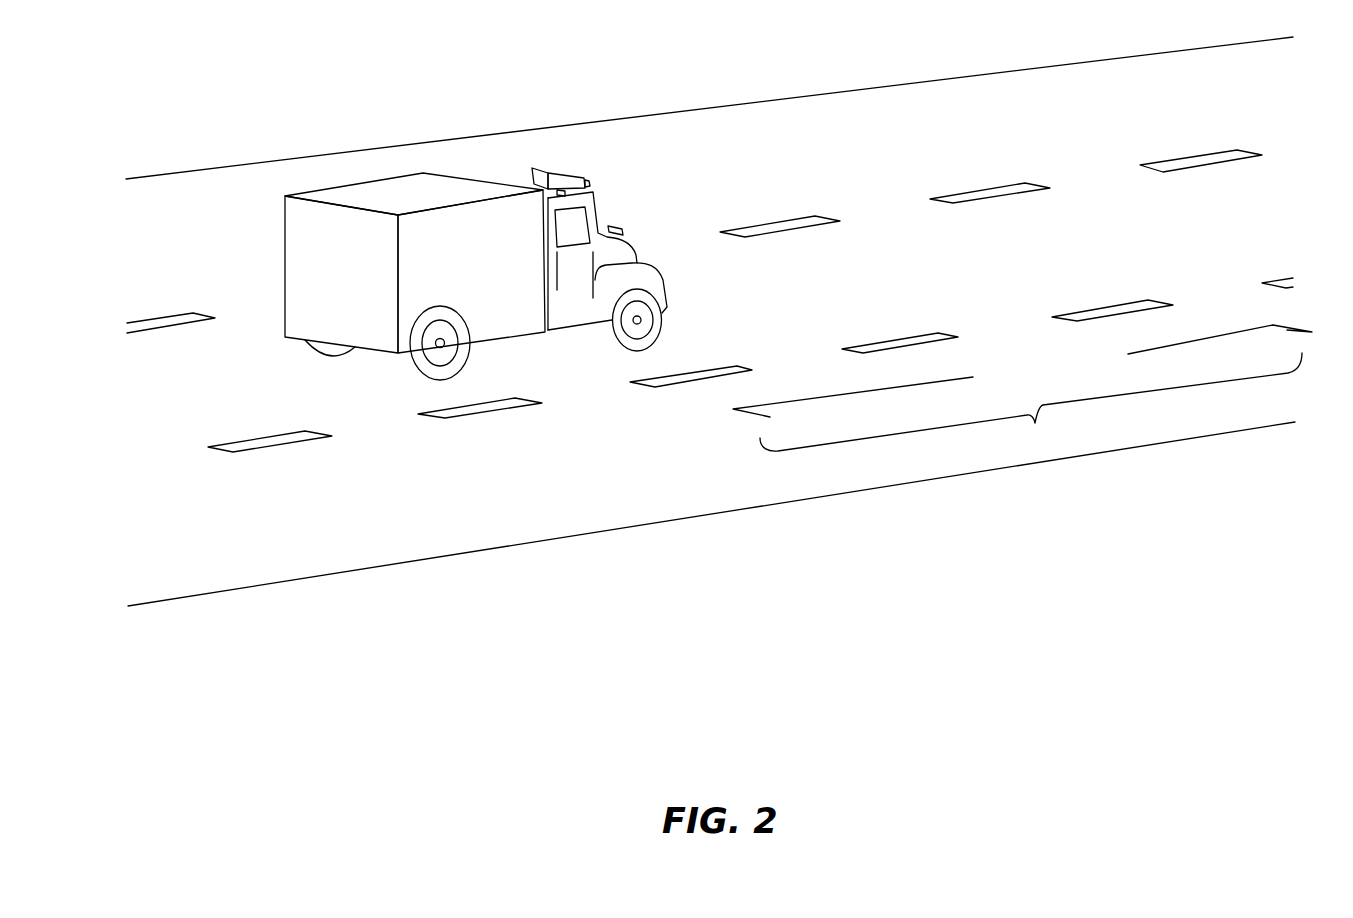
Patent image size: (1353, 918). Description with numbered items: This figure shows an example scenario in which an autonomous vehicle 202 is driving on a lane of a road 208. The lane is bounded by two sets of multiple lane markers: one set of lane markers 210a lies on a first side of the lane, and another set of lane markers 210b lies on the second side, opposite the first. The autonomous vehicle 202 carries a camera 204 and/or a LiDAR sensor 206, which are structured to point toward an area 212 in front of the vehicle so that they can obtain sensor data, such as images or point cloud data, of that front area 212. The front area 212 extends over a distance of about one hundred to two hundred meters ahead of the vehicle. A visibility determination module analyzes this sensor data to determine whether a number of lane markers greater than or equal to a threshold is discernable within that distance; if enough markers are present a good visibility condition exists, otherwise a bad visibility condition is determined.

The autonomous vehicle 202 is at (302, 234).
The camera 204 is at (570, 170).
The LiDAR sensor 206 is at (618, 225).
The road 208 is at (562, 520).
The lane markers 210a is at (972, 202).
The lane markers 210b is at (1130, 298).
The area in front of the autonomous vehicle 212 is at (1022, 390).